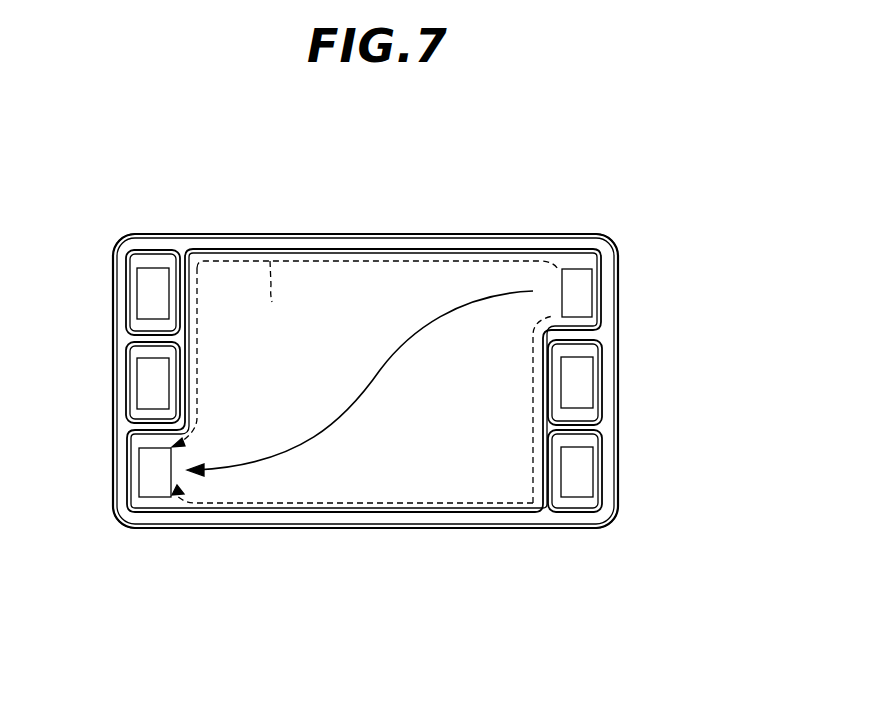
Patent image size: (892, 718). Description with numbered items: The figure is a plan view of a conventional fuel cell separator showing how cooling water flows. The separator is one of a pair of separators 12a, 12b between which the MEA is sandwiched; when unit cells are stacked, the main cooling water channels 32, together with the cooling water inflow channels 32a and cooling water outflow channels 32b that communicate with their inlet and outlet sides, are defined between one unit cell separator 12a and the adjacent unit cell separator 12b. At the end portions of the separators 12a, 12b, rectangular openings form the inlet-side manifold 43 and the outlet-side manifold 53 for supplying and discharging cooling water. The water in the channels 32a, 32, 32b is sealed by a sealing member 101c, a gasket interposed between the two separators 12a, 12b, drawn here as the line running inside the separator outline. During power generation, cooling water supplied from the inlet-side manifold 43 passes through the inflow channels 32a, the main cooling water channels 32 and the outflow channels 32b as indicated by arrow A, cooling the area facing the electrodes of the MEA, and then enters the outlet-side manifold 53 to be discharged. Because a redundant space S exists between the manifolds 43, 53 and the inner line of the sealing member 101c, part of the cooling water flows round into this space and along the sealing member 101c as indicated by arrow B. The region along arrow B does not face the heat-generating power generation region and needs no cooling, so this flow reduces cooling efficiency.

The separator 12a is at (453, 236).
The separator 12b is at (365, 381).
The sealing member 101c is at (410, 251).
The main cooling water channels 32 is at (406, 424).
The cooling water inflow channels 32a is at (548, 302).
The cooling water outflow channels 32b is at (180, 478).
The inlet-side manifold 43 is at (568, 269).
The outlet-side manifold 53 is at (163, 497).
The redundant space S is at (303, 258).
The arrow indicating cooling water flow A is at (378, 368).
The arrow indicating cooling water flow along sealing member B is at (270, 296).